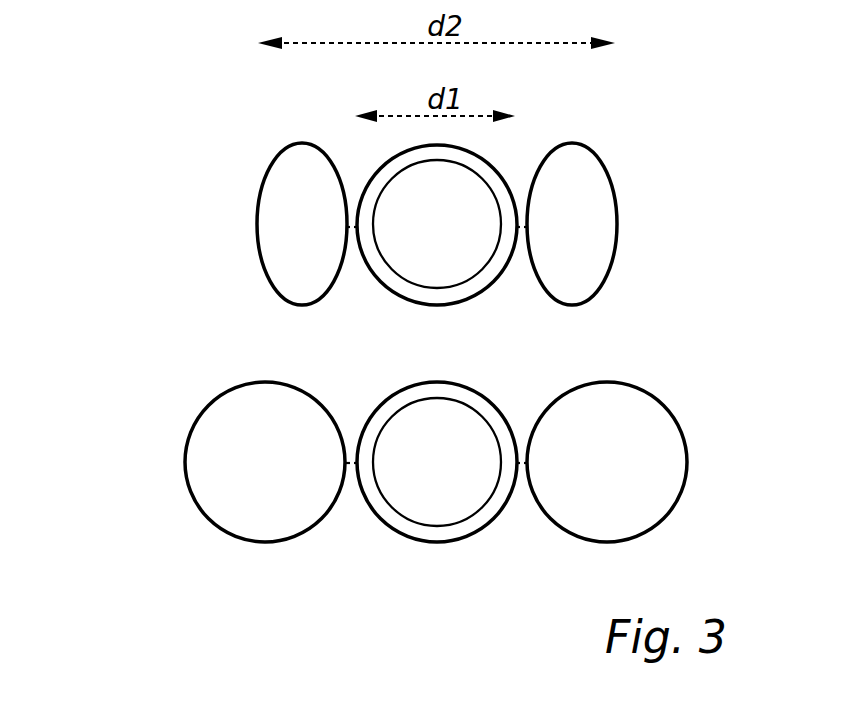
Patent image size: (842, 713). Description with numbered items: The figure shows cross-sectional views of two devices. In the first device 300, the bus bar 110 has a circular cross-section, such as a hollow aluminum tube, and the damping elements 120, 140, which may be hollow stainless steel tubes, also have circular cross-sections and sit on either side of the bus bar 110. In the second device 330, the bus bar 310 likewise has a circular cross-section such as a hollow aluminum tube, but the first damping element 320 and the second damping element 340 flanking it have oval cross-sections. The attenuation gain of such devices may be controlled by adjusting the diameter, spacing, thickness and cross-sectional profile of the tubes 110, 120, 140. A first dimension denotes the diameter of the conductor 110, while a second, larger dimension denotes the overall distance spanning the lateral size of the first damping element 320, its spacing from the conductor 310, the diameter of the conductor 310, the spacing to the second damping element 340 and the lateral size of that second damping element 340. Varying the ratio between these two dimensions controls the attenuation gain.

The first device 300 is at (143, 428).
The bus bar 110 is at (410, 524).
The damping element 120 is at (203, 513).
The damping element 140 is at (680, 427).
The second device 330 is at (172, 237).
The bus bar 310 is at (493, 168).
The first damping element 320 is at (262, 182).
The second damping element 340 is at (615, 212).